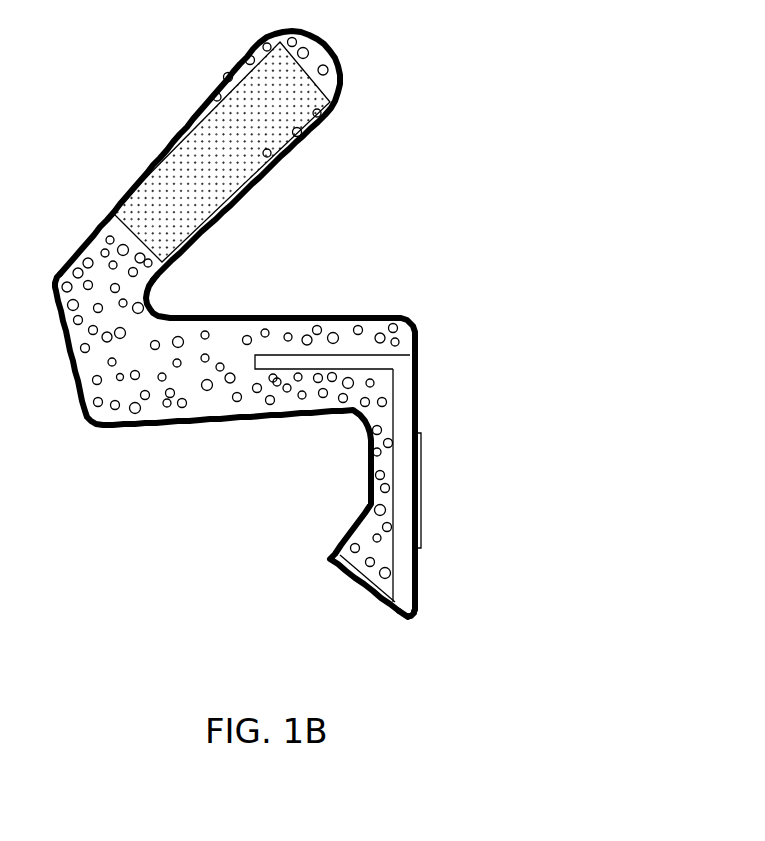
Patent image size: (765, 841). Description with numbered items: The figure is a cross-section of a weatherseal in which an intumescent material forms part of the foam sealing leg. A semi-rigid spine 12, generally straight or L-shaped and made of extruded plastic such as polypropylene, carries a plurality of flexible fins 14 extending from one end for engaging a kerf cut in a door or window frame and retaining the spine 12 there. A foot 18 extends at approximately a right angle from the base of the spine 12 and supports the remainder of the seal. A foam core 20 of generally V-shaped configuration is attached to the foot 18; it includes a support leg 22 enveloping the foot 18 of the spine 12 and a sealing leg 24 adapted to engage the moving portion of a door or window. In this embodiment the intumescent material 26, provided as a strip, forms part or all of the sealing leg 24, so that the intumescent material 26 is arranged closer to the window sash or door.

The spine 12 is at (419, 553).
The flexible fins 14 is at (355, 584).
The foot 18 is at (366, 360).
The foam core 20 is at (110, 383).
The support leg 22 is at (218, 401).
The sealing leg 24 is at (208, 83).
The intumescent material 26 is at (228, 177).